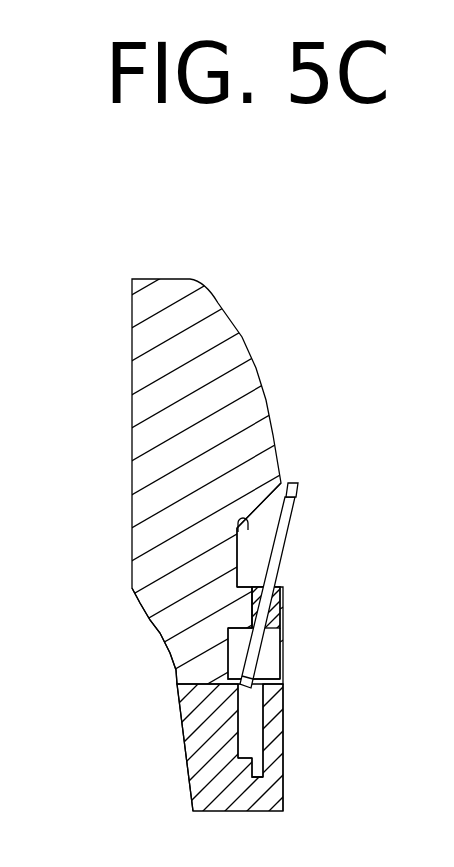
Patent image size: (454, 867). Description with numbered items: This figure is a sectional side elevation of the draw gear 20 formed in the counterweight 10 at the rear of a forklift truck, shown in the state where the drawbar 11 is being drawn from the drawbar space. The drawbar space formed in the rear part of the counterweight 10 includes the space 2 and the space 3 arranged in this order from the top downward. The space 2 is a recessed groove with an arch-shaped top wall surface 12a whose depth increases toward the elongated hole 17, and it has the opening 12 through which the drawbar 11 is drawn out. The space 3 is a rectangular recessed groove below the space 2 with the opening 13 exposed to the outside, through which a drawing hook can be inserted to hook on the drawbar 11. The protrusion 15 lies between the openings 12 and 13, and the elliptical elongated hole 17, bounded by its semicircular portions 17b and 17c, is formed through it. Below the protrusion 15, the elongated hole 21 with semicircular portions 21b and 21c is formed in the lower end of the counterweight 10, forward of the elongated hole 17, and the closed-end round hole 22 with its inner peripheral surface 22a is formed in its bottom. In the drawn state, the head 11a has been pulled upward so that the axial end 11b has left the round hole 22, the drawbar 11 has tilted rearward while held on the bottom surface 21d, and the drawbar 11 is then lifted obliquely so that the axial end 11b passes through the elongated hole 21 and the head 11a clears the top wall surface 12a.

The counterweight 10 is at (210, 294).
The space 2 is at (250, 545).
The space 3 is at (240, 648).
The drawbar 11 is at (290, 547).
The head 11a is at (298, 490).
The axial end 11b is at (252, 676).
The opening 12 is at (283, 481).
The top wall surface 12a is at (243, 520).
The opening 13 is at (272, 650).
The protrusion 15 is at (282, 593).
The elongated hole 17 is at (255, 588).
The semicircular portion 17b is at (262, 605).
The semicircular portion 17c is at (283, 627).
The draw gear 20 is at (385, 481).
The elongated hole 21 is at (238, 695).
The semicircular portion 21b is at (245, 722).
The semicircular portion 21c is at (283, 735).
The bottom surface 21d is at (237, 758).
The closed-end round hole 22 is at (258, 770).
The inner peripheral surface 22a is at (252, 775).